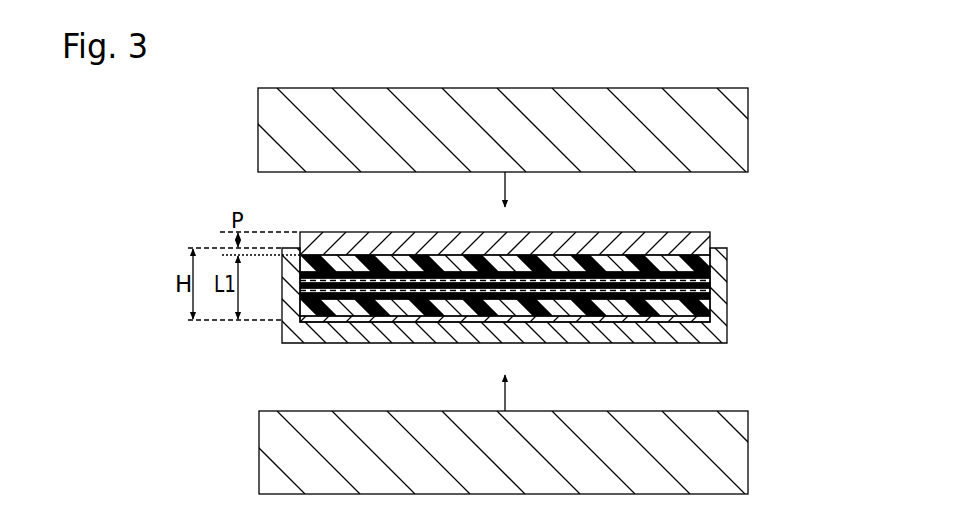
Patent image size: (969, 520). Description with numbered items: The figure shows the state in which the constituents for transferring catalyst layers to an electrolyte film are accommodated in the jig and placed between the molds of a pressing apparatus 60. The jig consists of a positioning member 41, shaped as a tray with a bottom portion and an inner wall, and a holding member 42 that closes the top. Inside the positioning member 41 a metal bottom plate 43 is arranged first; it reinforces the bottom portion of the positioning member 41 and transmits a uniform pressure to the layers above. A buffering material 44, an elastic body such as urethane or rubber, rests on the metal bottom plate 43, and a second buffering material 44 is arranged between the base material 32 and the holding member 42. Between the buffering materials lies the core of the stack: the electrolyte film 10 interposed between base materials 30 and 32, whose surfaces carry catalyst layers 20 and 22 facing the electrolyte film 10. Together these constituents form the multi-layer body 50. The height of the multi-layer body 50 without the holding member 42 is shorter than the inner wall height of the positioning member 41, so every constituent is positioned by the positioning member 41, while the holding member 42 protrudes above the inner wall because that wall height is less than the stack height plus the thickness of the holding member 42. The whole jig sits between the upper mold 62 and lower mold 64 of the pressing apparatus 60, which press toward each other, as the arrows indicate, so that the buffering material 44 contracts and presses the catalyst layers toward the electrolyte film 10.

The electrolyte film 10 is at (712, 288).
The catalyst layer 20 is at (712, 283).
The catalyst layer 22 is at (712, 292).
The base material 30 is at (712, 276).
The base material 32 is at (712, 298).
The positioning member 41 is at (735, 347).
The holding member 42 is at (712, 243).
The metal bottom plate 43 is at (712, 318).
The buffering material 44 is at (712, 262).
The multi-layer body 50 is at (832, 183).
The pressing apparatus 60 is at (183, 135).
The upper mold 62 is at (258, 103).
The lower mold 64 is at (259, 462).